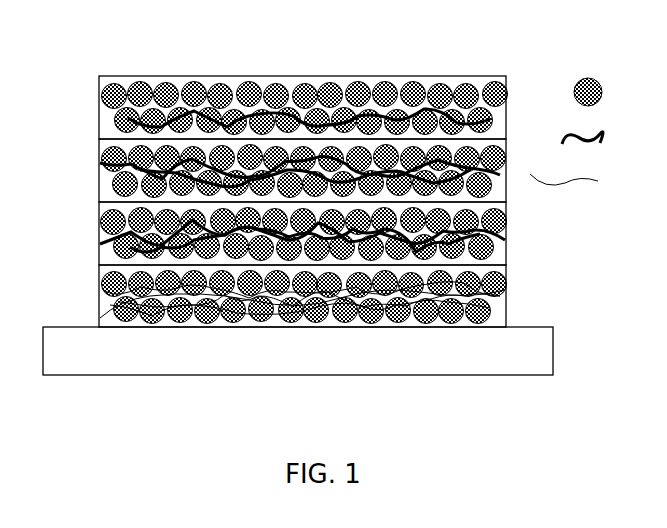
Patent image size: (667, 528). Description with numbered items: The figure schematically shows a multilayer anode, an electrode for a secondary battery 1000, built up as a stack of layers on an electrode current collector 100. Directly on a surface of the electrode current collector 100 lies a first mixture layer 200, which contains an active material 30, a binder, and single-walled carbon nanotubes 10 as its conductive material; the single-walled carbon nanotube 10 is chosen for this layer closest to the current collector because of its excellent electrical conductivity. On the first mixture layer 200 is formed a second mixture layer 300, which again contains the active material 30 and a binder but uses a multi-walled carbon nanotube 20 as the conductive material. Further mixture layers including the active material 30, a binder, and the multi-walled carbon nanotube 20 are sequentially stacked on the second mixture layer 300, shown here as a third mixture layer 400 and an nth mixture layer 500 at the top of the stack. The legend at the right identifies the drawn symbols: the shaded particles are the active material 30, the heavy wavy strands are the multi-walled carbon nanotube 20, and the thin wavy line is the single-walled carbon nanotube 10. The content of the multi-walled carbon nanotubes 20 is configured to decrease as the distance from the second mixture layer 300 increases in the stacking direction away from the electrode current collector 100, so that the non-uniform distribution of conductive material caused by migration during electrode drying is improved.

The electrode for a secondary battery 1000 is at (188, 26).
The electrode current collector 100 is at (317, 375).
The first mixture layer 200 is at (97, 283).
The second mixture layer 300 is at (97, 223).
The third mixture layer 400 is at (97, 162).
The nth mixture layer 500 is at (97, 99).
The active material 30 is at (606, 92).
The multi-walled carbon nanotube 20 is at (600, 137).
The single-walled carbon nanotube 10 is at (584, 180).